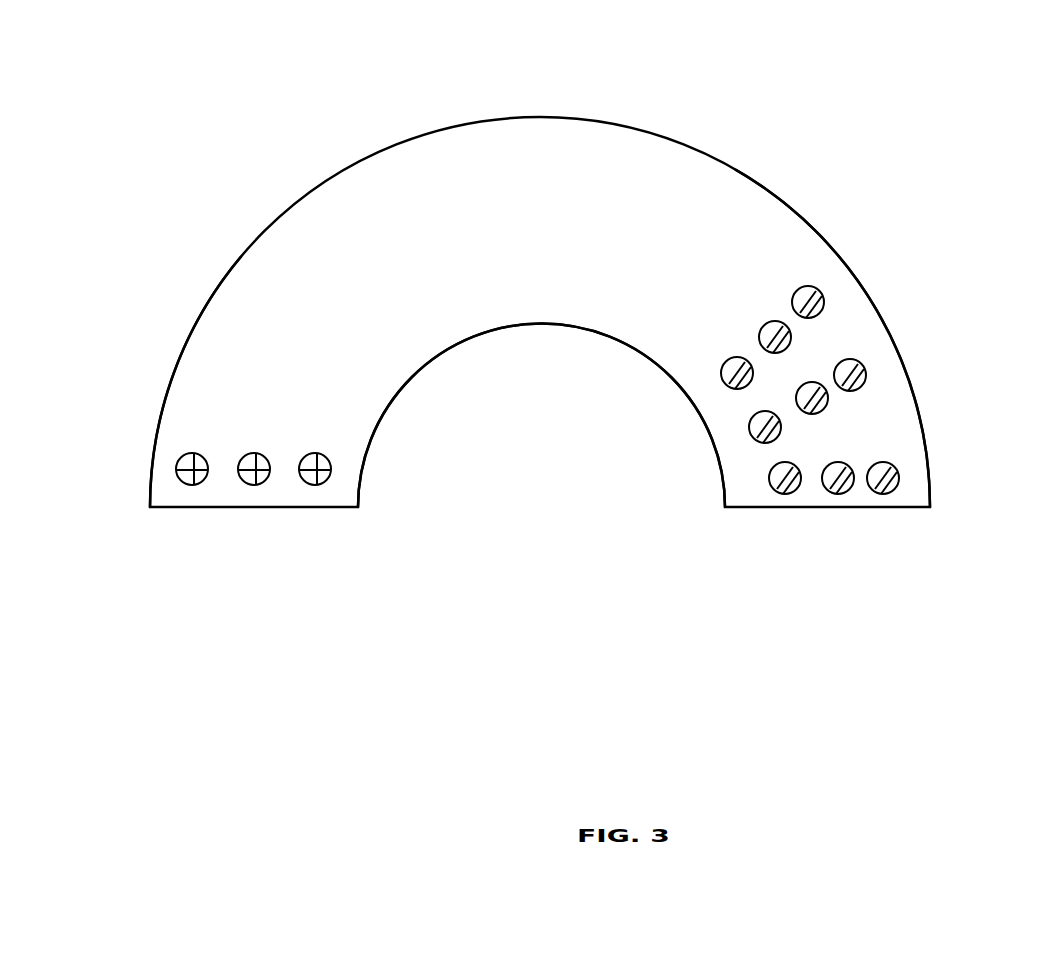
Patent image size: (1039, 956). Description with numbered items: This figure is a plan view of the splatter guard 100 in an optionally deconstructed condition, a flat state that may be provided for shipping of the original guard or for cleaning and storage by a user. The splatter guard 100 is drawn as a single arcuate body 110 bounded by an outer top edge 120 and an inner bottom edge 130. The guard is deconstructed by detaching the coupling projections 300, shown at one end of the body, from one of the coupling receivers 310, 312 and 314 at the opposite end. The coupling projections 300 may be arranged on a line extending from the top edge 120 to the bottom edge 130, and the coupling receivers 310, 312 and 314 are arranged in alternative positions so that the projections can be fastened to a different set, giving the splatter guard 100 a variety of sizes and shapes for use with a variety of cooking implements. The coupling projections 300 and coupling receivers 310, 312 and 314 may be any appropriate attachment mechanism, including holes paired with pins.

The splatter guard 100 is at (192, 82).
The body wall 110 is at (728, 262).
The top edge 120 is at (243, 252).
The bottom edge 130 is at (452, 345).
The coupling projections 300 is at (210, 430).
The coupling receiver 310 is at (882, 444).
The coupling receiver 312 is at (886, 389).
The coupling receiver 314 is at (853, 294).